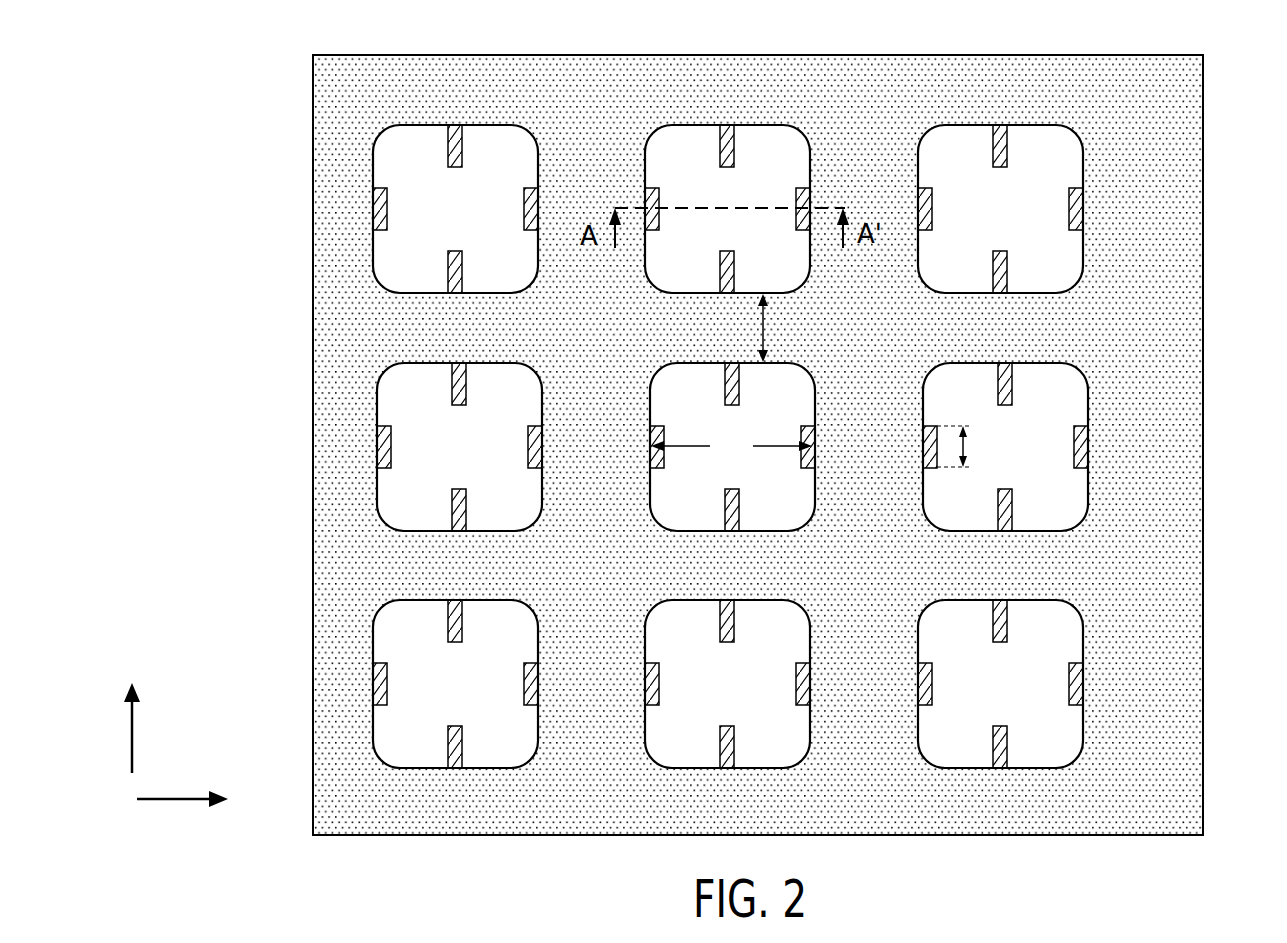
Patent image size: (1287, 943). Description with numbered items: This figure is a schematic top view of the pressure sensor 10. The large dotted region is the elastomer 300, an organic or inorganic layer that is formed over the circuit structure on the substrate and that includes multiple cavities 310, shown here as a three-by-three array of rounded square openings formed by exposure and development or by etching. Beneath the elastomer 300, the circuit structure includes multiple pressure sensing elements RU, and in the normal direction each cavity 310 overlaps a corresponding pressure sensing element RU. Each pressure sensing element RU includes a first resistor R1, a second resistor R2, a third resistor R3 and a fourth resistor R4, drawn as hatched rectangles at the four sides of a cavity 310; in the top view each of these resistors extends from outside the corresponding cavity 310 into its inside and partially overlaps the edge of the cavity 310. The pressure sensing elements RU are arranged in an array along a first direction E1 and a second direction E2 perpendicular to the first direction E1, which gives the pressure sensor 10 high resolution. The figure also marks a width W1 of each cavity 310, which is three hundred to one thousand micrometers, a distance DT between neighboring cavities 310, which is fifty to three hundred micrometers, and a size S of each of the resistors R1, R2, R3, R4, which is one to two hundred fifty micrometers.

The pressure sensor 10 is at (1279, 832).
The elastomer 300 is at (1183, 744).
The cavity 310 is at (1051, 172).
The pressure sensing element RU is at (233, 333).
The first resistor R1 is at (384, 206).
The second resistor R2 is at (450, 270).
The third resistor R3 is at (528, 217).
The fourth resistor R4 is at (450, 155).
The width of cavity W1 is at (731, 446).
The size of resistor S is at (962, 446).
The distance between cavities DT is at (779, 328).
The first direction E1 is at (148, 728).
The second direction E2 is at (182, 816).